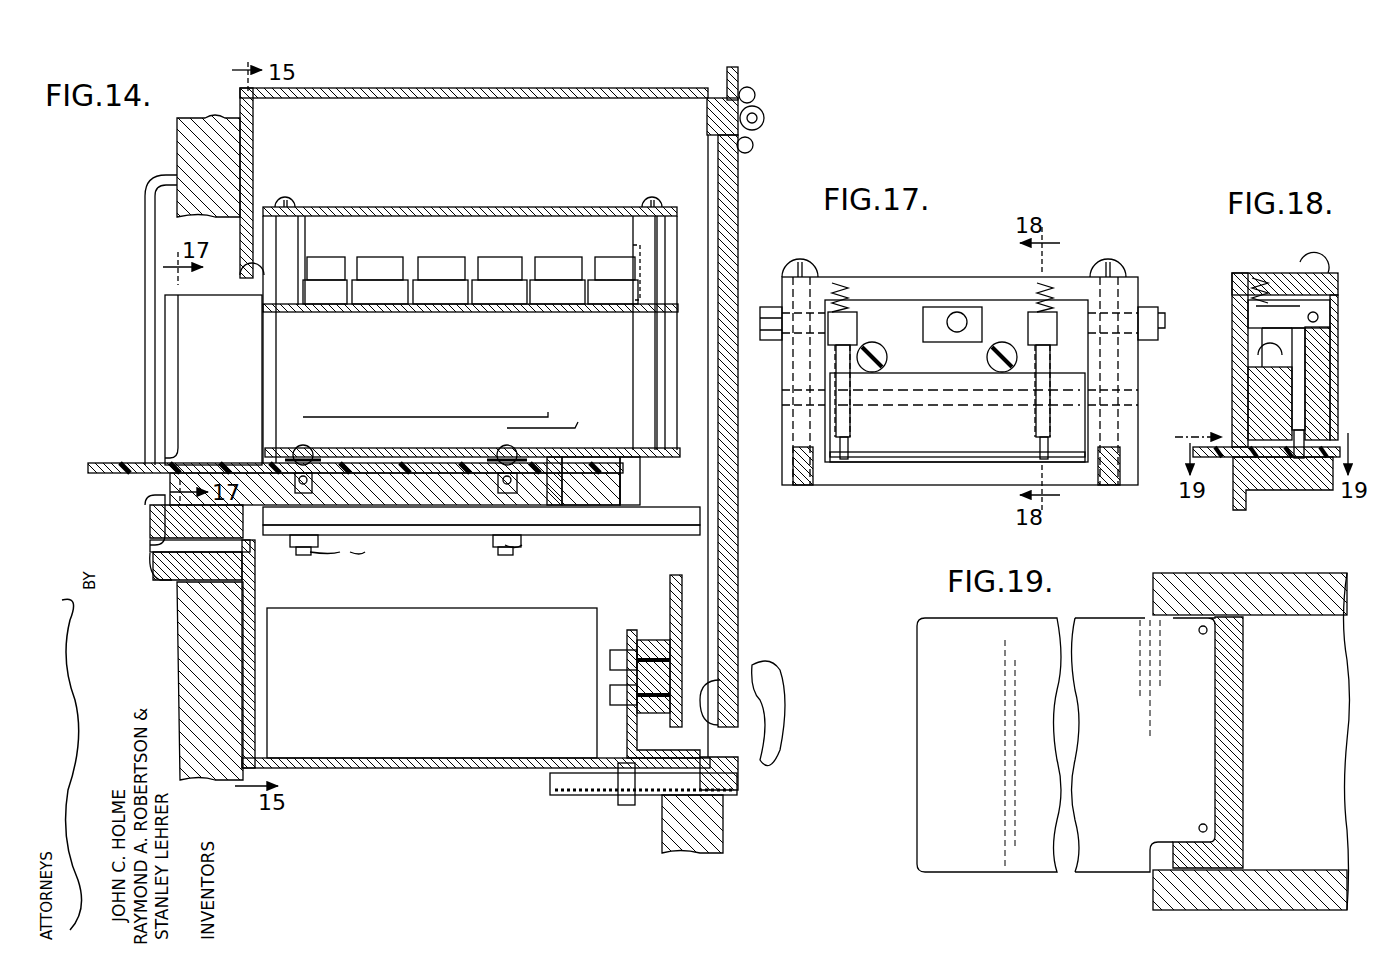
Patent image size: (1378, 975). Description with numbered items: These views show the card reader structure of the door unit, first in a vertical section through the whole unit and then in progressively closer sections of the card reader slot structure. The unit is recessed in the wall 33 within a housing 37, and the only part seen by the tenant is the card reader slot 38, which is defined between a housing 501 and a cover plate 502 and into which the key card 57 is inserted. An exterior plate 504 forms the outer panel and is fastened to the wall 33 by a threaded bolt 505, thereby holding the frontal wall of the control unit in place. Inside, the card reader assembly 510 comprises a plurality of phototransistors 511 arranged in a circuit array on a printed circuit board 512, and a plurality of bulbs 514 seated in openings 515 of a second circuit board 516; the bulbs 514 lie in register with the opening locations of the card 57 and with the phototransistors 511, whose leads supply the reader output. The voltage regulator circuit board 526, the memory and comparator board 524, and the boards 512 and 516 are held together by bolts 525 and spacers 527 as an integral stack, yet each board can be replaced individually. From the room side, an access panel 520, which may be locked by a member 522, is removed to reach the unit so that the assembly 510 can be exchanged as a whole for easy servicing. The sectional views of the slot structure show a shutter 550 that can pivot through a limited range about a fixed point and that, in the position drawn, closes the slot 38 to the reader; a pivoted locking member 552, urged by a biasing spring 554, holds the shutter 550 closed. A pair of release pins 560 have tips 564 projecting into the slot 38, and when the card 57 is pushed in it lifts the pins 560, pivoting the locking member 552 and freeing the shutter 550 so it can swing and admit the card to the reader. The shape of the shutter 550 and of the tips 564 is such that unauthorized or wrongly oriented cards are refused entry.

In FIG. 14, the wall 33 is at (176, 138).
In FIG. 14, the housing 37 is at (450, 88).
In FIG. 17, the card reader slot 38 is at (893, 455).
In FIG. 18, the card reader slot 38 is at (1240, 445).
In FIG. 14, the card 57 is at (120, 460).
In FIG. 18, the card 57 is at (1225, 462).
In FIG. 19, the card 57 is at (1124, 752).
In FIG. 14, the housing 501 is at (237, 356).
In FIG. 17, the housing 501 is at (1122, 435).
In FIG. 19, the housing 501 is at (1275, 578).
In FIG. 14, the cover plate 502 is at (180, 425).
In FIG. 17, the cover plate 502 is at (963, 437).
In FIG. 18, the cover plate 502 is at (1236, 305).
In FIG. 14, the exterior plate 504 is at (146, 300).
In FIG. 14, the threaded bolt 505 is at (152, 528).
In FIG. 14, the card reader assembly 510 is at (510, 184).
In FIG. 14, the phototransistors 511 is at (306, 445).
In FIG. 14, the printed circuit board 512 is at (350, 448).
In FIG. 14, the bulbs 514 is at (312, 480).
In FIG. 14, the openings 515 is at (290, 540).
In FIG. 14, the circuit board 516 is at (575, 520).
In FIG. 14, the access panel 520 is at (738, 583).
In FIG. 14, the locking member 522 is at (782, 680).
In FIG. 14, the memory and comparator board 524 is at (385, 312).
In FIG. 14, the bolts 525 is at (294, 200).
In FIG. 14, the voltage regulator circuit board 526 is at (390, 206).
In FIG. 14, the spacers 527 is at (672, 258).
In FIG. 18, the shutter 550 is at (1315, 400).
In FIG. 19, the shutter 550 is at (1235, 752).
In FIG. 18, the pivoted locking member 552 is at (1290, 318).
In FIG. 17, the biasing spring 554 is at (838, 283).
In FIG. 18, the biasing spring 554 is at (1260, 278).
In FIG. 17, the release pins 560 is at (845, 420).
In FIG. 18, the release pins 560 is at (1298, 380).
In FIG. 17, the tips 564 is at (846, 460).
In FIG. 18, the tips 564 is at (1297, 440).